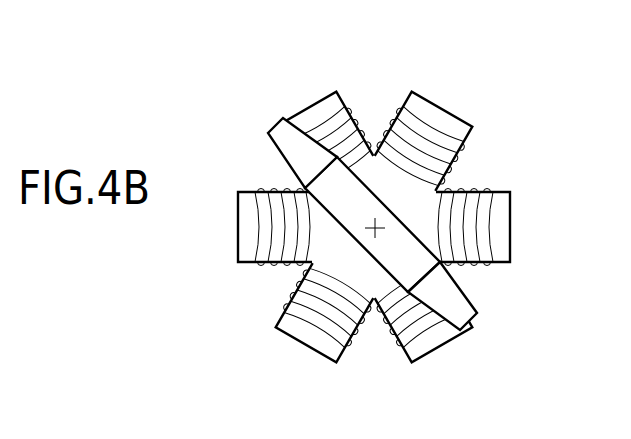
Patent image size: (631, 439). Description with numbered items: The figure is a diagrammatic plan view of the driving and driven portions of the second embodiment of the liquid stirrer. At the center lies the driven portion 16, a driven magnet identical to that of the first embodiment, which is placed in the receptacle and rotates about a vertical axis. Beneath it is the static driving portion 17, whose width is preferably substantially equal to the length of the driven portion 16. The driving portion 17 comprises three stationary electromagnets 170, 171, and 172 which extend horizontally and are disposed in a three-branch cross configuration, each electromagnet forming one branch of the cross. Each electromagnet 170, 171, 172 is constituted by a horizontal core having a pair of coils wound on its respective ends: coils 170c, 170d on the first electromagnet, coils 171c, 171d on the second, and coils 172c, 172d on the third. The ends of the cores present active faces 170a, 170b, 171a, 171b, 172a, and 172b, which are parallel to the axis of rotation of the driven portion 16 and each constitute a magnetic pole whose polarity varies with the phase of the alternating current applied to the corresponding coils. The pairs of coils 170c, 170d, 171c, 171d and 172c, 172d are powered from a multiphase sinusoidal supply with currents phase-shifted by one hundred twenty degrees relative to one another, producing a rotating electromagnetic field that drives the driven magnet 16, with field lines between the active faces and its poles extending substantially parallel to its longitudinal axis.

The driven portion 16 is at (270, 117).
The static driving portion 17 is at (479, 133).
The electromagnet 170 is at (234, 249).
The active face 170a is at (237, 230).
The active face 170b is at (512, 202).
The coil 170c is at (267, 262).
The coil 170d is at (482, 263).
The electromagnet 171 is at (452, 342).
The active face 171a is at (328, 92).
The active face 171b is at (422, 360).
The coil 171c is at (307, 120).
The coil 171d is at (430, 350).
The electromagnet 172 is at (448, 102).
The active face 172a is at (418, 70).
The active face 172b is at (317, 357).
The coil 172c is at (460, 117).
The coil 172d is at (290, 340).